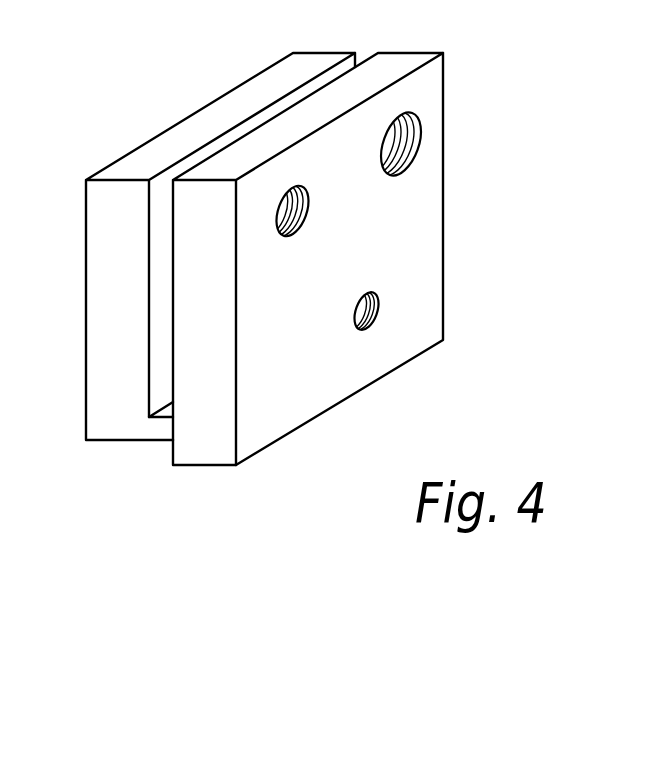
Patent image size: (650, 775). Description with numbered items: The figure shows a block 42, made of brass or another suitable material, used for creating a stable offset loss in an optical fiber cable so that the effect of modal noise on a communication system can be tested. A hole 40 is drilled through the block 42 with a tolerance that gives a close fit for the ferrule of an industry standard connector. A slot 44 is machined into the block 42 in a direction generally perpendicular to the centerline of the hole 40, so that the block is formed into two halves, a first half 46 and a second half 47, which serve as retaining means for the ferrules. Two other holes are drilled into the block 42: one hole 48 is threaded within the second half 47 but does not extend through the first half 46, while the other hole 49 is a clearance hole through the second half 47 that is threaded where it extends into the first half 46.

The hole 40 is at (378, 312).
The block 42 is at (203, 458).
The slot 44 is at (365, 53).
The first half 46 is at (97, 218).
The second half 47 is at (223, 288).
The threaded hole 48 is at (308, 208).
The clearance hole 49 is at (422, 128).